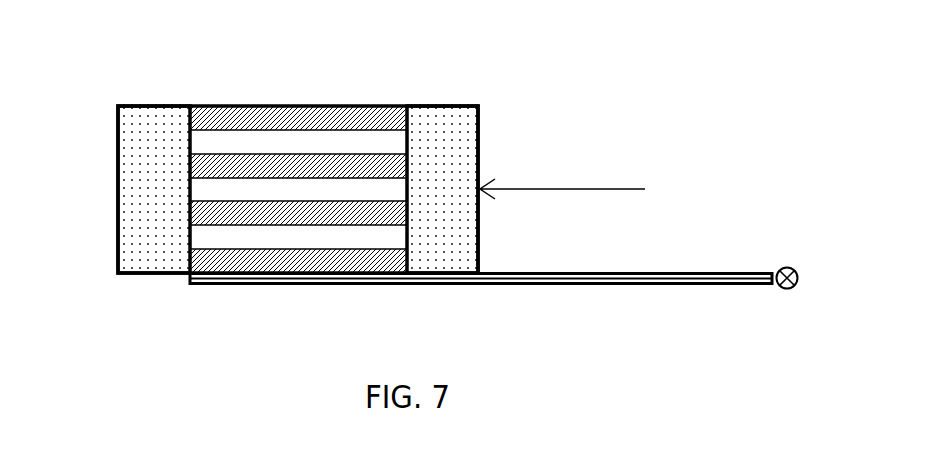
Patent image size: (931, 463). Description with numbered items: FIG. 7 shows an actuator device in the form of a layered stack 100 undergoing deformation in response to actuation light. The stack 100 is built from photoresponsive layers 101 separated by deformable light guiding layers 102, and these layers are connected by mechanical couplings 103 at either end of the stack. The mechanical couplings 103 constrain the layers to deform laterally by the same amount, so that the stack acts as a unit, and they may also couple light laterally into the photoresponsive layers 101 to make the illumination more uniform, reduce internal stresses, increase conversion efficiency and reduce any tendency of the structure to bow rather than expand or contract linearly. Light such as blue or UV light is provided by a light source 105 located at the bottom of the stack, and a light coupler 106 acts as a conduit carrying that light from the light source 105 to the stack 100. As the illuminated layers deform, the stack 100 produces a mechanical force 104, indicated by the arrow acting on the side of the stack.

The battery / electrode stack assembly 100 is at (83, 106).
The stacked electrode layers 101 is at (327, 122).
The first end block 102 is at (198, 143).
The mechanical couplings 103 is at (443, 122).
The pressure / direction arrow 104 is at (610, 188).
The terminal / connection point 105 is at (797, 268).
The base plate / conductor 106 is at (701, 277).